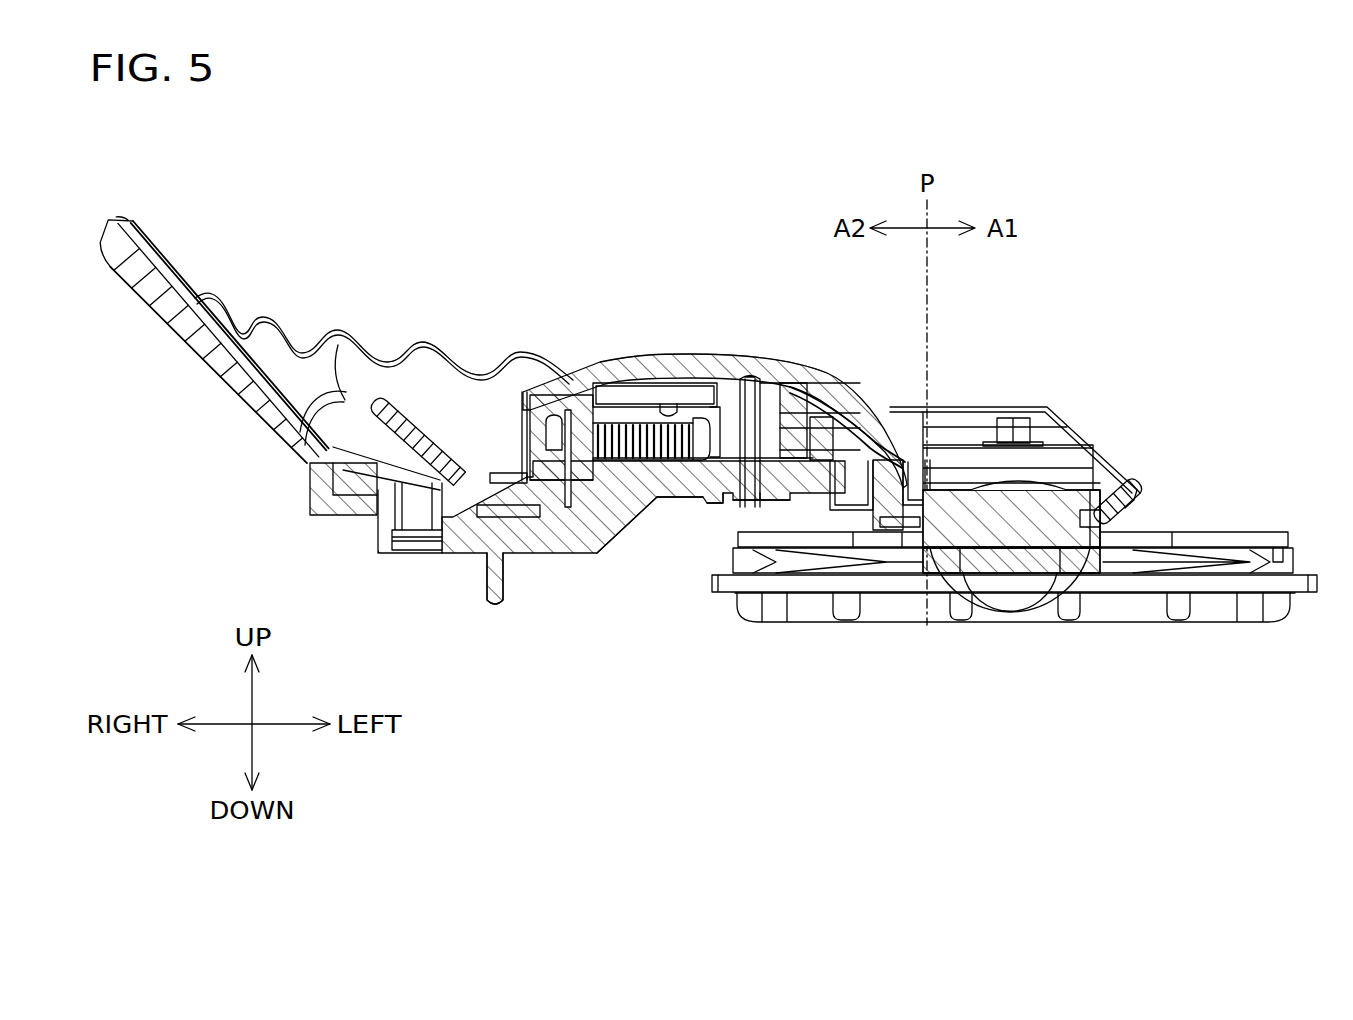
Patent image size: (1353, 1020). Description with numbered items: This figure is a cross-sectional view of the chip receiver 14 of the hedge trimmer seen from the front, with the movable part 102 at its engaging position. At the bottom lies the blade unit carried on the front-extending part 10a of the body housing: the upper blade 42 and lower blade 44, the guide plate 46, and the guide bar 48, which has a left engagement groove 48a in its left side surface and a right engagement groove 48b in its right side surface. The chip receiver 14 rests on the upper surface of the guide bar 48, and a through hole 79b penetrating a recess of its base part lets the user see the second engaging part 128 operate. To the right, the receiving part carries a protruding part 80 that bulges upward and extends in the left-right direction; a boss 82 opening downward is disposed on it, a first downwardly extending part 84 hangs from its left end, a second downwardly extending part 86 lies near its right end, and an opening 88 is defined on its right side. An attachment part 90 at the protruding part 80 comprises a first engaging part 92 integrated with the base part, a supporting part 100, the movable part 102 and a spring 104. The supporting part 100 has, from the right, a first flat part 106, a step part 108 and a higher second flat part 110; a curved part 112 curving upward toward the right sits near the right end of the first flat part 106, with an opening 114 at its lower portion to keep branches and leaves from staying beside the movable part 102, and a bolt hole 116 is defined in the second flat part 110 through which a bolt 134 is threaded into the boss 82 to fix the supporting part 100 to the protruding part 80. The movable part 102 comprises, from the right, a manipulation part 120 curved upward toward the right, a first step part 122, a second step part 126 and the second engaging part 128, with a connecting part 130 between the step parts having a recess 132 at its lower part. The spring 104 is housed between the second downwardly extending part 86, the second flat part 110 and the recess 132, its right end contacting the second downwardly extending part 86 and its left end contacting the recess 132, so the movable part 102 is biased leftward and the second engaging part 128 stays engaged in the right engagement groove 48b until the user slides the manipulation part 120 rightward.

The chip receiver 14 is at (138, 236).
The opening 88 is at (323, 326).
The manipulation part 120 is at (384, 395).
The movable part 102 is at (445, 373).
The first step part 122 is at (541, 402).
The second downwardly extending part 86 is at (578, 420).
The spring 104 is at (612, 356).
The protruding part 80 is at (660, 360).
The recess 132 is at (678, 420).
The connecting part 130 is at (720, 400).
The bolt 134 is at (750, 390).
The boss 82 is at (783, 398).
The first downwardly extending part 84 is at (893, 425).
The second step part 126 is at (890, 445).
The guide bar 48 is at (958, 490).
The through hole 79b is at (1052, 480).
The first engaging part 92 is at (1140, 511).
The curved part 112 is at (360, 480).
The opening 114 is at (408, 552).
The supporting part 100 is at (610, 591).
The attachment part 90 is at (500, 638).
The first flat part 106 is at (547, 542).
The step part 108 is at (600, 505).
The second flat part 110 is at (673, 487).
The bolt hole 116 is at (757, 472).
The second engaging part 128 is at (900, 530).
The right engagement groove 48b is at (947, 574).
The upper blade 42 is at (972, 587).
The lower blade 44 is at (999, 573).
The front-extending part 10a is at (1033, 583).
The guide plate 46 is at (1072, 560).
The left engagement groove 48a is at (1102, 537).